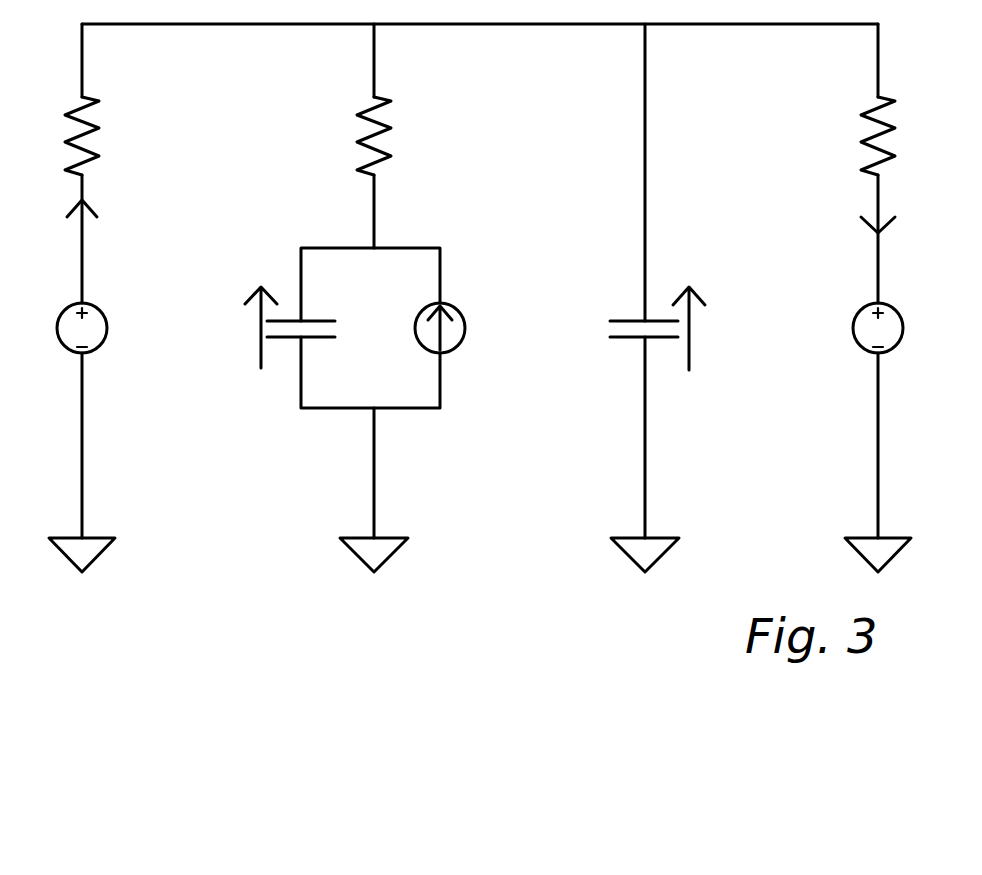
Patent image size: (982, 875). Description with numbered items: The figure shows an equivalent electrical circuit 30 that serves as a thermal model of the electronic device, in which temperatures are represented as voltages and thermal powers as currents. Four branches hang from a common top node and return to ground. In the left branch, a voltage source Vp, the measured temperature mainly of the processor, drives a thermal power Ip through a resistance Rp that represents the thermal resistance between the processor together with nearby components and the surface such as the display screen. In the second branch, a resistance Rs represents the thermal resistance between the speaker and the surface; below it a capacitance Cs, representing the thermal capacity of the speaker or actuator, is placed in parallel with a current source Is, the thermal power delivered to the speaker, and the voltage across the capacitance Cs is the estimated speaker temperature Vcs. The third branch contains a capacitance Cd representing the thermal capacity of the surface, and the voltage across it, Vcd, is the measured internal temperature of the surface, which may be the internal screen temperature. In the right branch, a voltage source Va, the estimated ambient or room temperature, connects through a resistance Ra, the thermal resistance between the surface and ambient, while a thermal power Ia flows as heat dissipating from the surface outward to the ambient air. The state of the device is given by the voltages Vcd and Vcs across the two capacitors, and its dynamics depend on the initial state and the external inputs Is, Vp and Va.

The equivalent electrical circuit 30 is at (470, 392).
The resistance Rp is at (60, 136).
The thermal power Ip is at (66, 209).
The measured temperature Vp is at (59, 328).
The resistance Rs is at (355, 136).
The capacitance Cs is at (307, 314).
The thermal power Is is at (456, 328).
The estimated temperature Vcs is at (237, 319).
The capacitance Cd is at (625, 333).
The measured temperature Vcd is at (707, 312).
The resistance Ra is at (858, 136).
The thermal power Ia is at (894, 229).
The estimated temperature Va is at (857, 328).